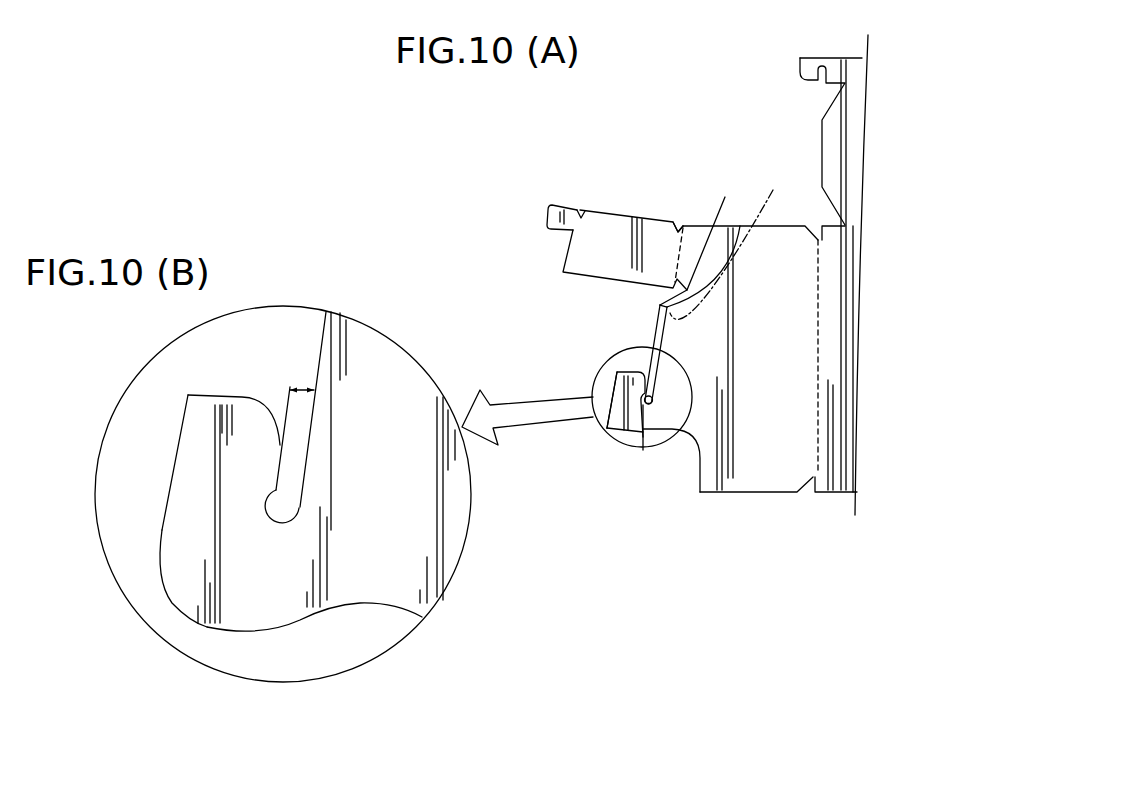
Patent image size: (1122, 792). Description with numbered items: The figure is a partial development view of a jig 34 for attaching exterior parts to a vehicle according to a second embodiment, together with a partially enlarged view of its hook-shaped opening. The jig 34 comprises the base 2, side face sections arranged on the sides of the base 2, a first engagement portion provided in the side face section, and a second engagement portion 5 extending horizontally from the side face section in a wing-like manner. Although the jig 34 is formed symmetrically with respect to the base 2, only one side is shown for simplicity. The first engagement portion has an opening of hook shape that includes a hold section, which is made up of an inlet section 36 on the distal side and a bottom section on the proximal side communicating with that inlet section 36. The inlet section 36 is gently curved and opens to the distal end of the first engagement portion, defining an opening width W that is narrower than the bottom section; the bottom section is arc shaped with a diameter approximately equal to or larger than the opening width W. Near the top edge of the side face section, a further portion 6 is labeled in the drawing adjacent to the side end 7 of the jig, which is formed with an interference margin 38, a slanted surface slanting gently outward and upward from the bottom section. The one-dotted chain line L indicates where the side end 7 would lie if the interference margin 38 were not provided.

The base 2 is at (845, 417).
The second engagement portion 5 is at (600, 200).
The hook piece 6 is at (700, 237).
The side end 7 is at (653, 338).
The jig 34 is at (673, 160).
The inlet section 36 is at (278, 450).
The interference margin 38 is at (660, 310).
The one-dotted chain line L is at (726, 241).
The opening width W is at (302, 376).